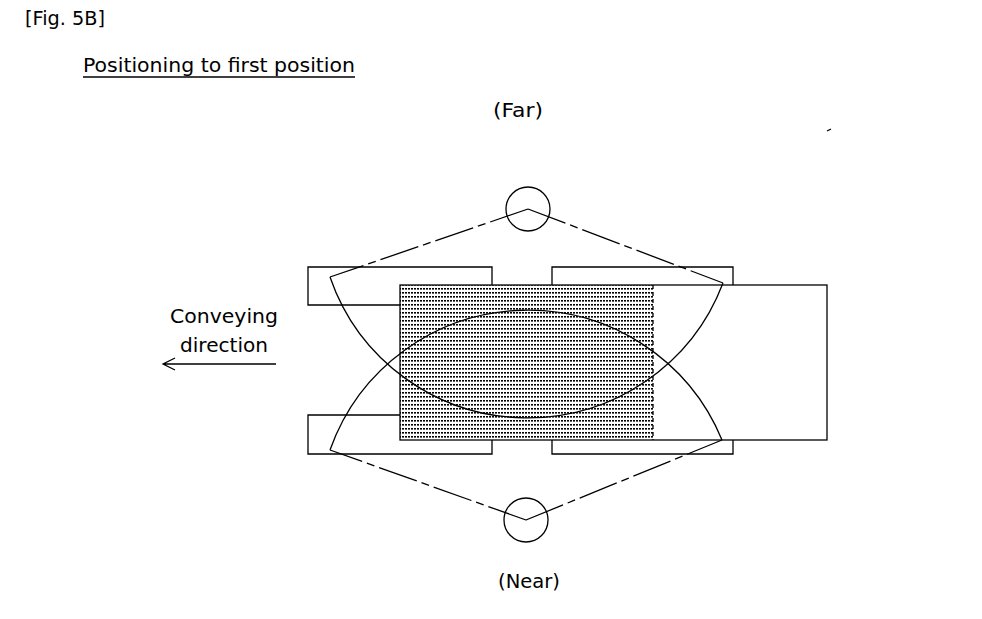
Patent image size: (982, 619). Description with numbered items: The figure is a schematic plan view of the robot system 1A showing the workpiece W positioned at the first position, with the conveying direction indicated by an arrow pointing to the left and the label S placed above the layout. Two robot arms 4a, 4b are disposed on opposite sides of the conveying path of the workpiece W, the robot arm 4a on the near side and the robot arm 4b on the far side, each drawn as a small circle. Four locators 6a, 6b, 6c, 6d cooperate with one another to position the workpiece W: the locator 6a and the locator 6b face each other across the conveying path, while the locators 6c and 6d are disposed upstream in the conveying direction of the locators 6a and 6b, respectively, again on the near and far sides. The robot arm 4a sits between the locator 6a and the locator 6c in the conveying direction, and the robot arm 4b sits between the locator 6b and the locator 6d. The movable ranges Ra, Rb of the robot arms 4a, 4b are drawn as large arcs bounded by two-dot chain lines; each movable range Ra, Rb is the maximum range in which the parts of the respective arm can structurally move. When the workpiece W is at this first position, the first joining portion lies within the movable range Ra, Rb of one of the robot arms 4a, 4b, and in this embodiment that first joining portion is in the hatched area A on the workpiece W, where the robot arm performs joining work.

The robot system 1A is at (845, 126).
The robot arm 4a is at (512, 533).
The robot arm 4b is at (517, 190).
The locator 6a is at (315, 455).
The locator 6b is at (308, 266).
The locator 6c is at (733, 455).
The locator 6d is at (736, 267).
The workpiece W is at (790, 285).
The area A is at (588, 438).
The movable range Ra is at (645, 470).
The movable range Rb is at (643, 250).
The positioning state S is at (311, 130).